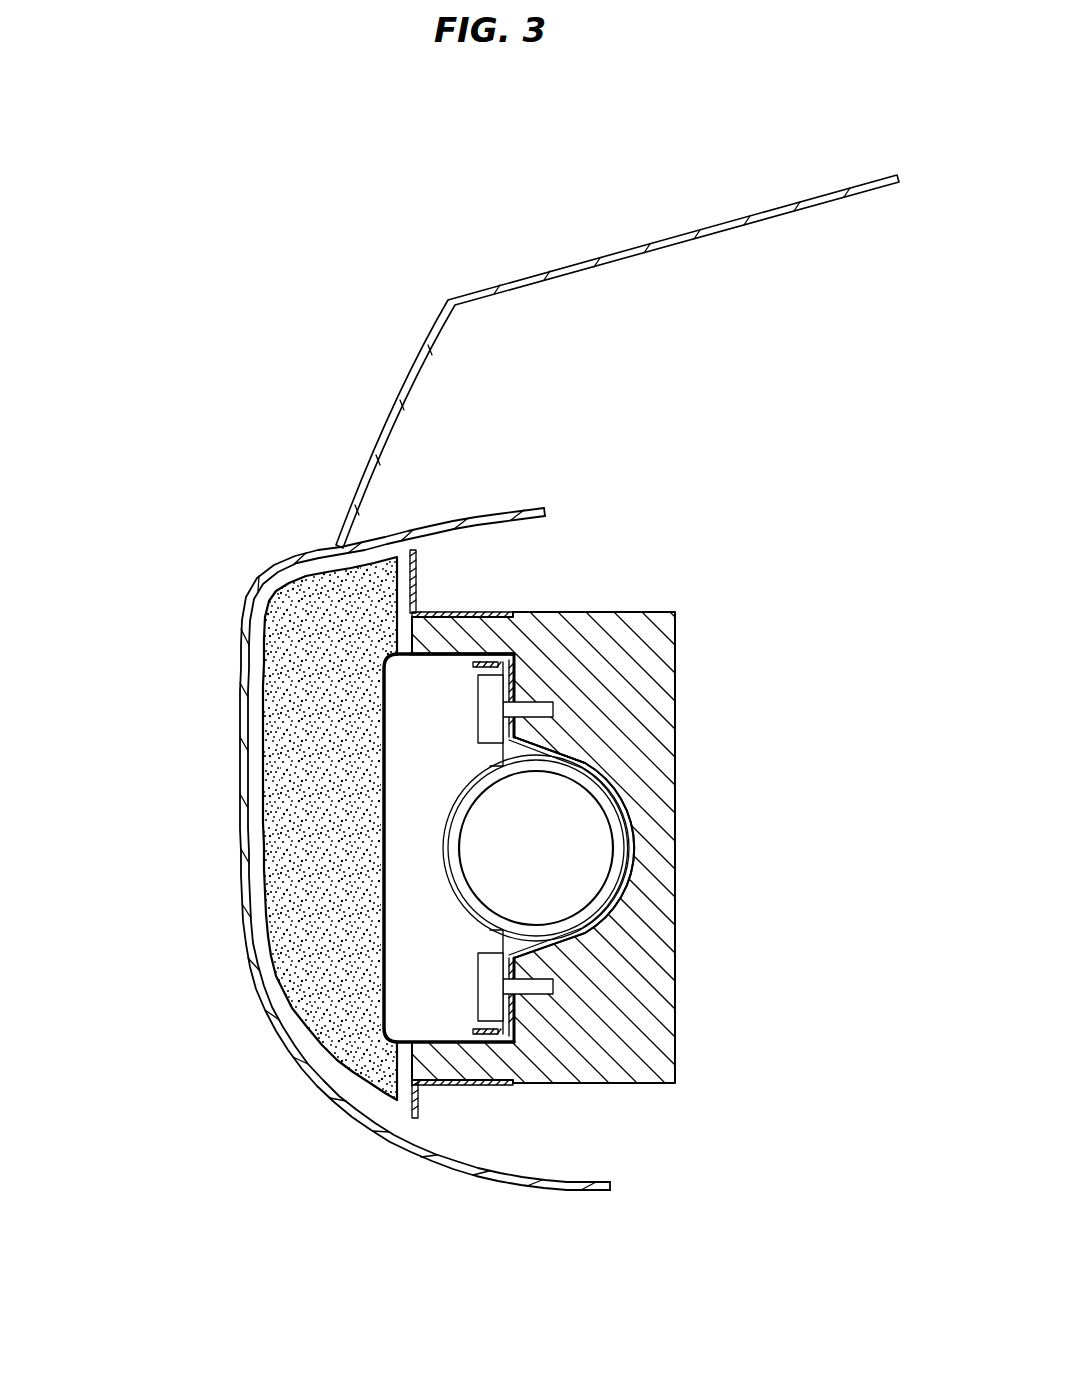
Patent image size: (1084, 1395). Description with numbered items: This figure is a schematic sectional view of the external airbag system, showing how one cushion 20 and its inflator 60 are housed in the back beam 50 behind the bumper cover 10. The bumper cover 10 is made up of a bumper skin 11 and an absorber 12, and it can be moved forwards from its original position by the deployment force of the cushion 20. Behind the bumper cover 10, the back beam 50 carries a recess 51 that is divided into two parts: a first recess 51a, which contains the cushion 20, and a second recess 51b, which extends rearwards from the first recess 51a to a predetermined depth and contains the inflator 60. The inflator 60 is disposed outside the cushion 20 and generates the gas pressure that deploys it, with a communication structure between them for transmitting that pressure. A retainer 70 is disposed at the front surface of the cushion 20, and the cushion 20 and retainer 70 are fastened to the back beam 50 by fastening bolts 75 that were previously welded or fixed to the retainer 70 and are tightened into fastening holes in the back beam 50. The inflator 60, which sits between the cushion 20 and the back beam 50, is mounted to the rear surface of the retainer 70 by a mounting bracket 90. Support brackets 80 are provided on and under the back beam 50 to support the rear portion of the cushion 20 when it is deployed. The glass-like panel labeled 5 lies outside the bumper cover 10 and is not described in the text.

The windshield glass 5 is at (600, 250).
The bumper cover 10 is at (338, 849).
The bumper skin 11 is at (240, 796).
The absorber 12 is at (290, 737).
The cushion 20 is at (394, 916).
The back beam 50 is at (660, 1060).
The recess 51 is at (441, 786).
The first recess 51a is at (412, 647).
The second recess 51b is at (540, 747).
The inflator 60 is at (580, 866).
The retainer 70 is at (490, 668).
The fastening bolt 75 is at (553, 984).
The support bracket 80 is at (410, 578).
The mounting bracket 90 is at (620, 818).